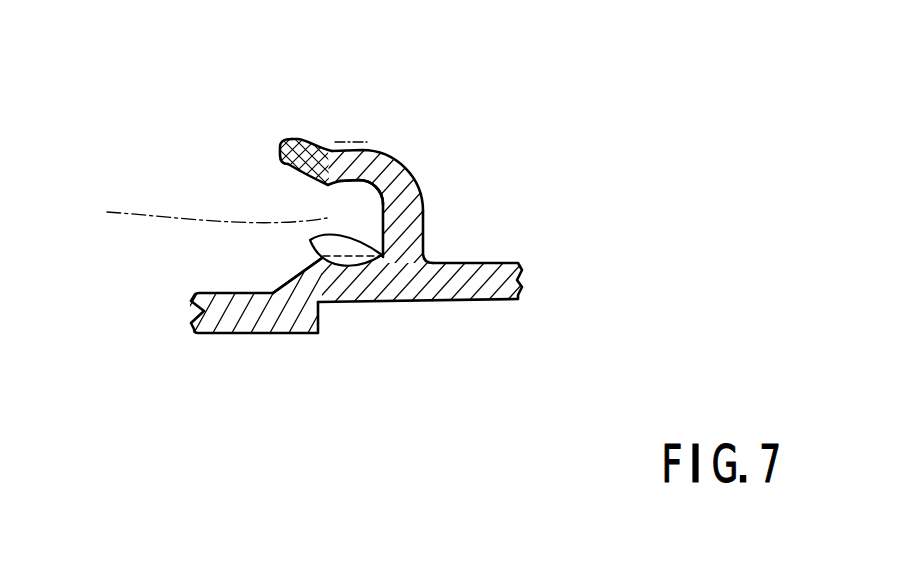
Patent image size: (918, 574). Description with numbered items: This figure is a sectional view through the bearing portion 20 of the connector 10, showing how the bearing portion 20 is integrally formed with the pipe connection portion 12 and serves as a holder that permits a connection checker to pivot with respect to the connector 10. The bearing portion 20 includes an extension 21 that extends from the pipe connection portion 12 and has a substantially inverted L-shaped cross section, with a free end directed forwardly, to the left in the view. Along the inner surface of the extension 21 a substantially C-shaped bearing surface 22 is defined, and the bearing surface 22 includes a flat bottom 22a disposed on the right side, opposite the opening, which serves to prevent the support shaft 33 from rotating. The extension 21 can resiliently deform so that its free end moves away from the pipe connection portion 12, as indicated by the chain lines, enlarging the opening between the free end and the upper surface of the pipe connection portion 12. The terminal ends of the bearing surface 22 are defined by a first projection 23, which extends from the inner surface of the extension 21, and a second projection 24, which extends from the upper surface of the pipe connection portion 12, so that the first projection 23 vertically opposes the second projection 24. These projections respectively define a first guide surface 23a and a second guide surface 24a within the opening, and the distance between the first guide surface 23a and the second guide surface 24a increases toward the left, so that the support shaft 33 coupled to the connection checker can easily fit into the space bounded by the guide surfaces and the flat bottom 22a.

The connector 10 is at (517, 250).
The pipe connection portion 12 is at (223, 334).
The bearing portion 20 is at (437, 193).
The extension 21 is at (390, 157).
The bearing surface 22 is at (310, 240).
The flat bottom 22a is at (382, 210).
The first projection 23 is at (312, 188).
The first guide surface 23a is at (282, 169).
The second projection 24 is at (320, 256).
The second guide surface 24a is at (293, 278).
The support shaft 33 is at (199, 213).